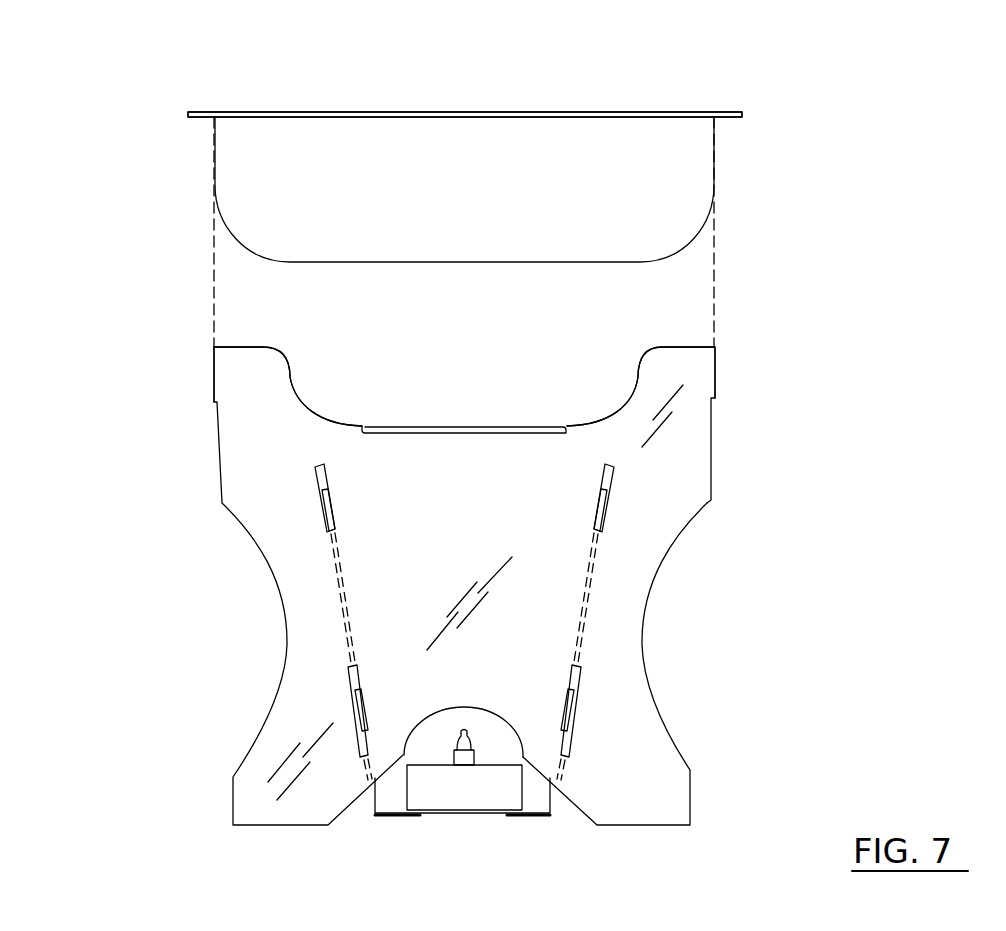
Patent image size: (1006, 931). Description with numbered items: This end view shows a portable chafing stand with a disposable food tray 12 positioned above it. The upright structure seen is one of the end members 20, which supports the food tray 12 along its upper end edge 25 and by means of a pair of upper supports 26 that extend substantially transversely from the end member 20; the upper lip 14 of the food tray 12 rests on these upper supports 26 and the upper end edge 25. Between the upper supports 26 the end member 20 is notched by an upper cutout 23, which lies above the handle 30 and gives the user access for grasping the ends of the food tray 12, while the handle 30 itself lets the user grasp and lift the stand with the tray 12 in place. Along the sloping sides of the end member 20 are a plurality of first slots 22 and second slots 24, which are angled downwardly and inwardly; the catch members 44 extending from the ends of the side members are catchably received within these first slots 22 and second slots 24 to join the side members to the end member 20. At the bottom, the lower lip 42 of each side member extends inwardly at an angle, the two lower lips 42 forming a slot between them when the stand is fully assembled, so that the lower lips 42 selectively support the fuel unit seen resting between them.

The disposable food tray 12 is at (463, 112).
The upper lip 14 is at (733, 111).
The end member 20 is at (276, 581).
The first slot 22 is at (613, 473).
The upper cutout 23 is at (300, 388).
The second slot 24 is at (316, 473).
The upper end edge 25 is at (690, 346).
The upper support 26 is at (214, 367).
The handle 30 is at (450, 426).
The lower lip 42 is at (532, 815).
The catch member 44 is at (321, 497).